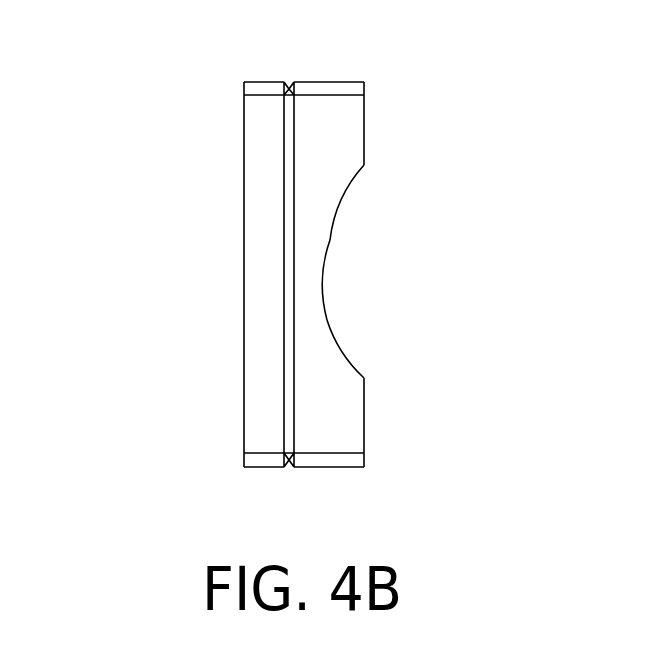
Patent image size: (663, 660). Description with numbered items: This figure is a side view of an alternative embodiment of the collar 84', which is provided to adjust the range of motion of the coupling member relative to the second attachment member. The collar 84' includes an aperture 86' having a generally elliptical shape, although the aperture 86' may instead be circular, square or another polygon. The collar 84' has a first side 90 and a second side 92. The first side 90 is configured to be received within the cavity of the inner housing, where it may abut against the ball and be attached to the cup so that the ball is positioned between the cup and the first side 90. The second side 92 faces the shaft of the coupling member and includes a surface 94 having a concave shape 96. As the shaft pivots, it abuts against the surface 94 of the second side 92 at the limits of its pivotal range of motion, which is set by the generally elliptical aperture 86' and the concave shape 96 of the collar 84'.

The collar 84' is at (132, 242).
The aperture 86' is at (395, 375).
The first side 90 is at (243, 192).
The second side 92 is at (362, 135).
The surface 94 is at (320, 235).
The concave shape 96 is at (313, 285).